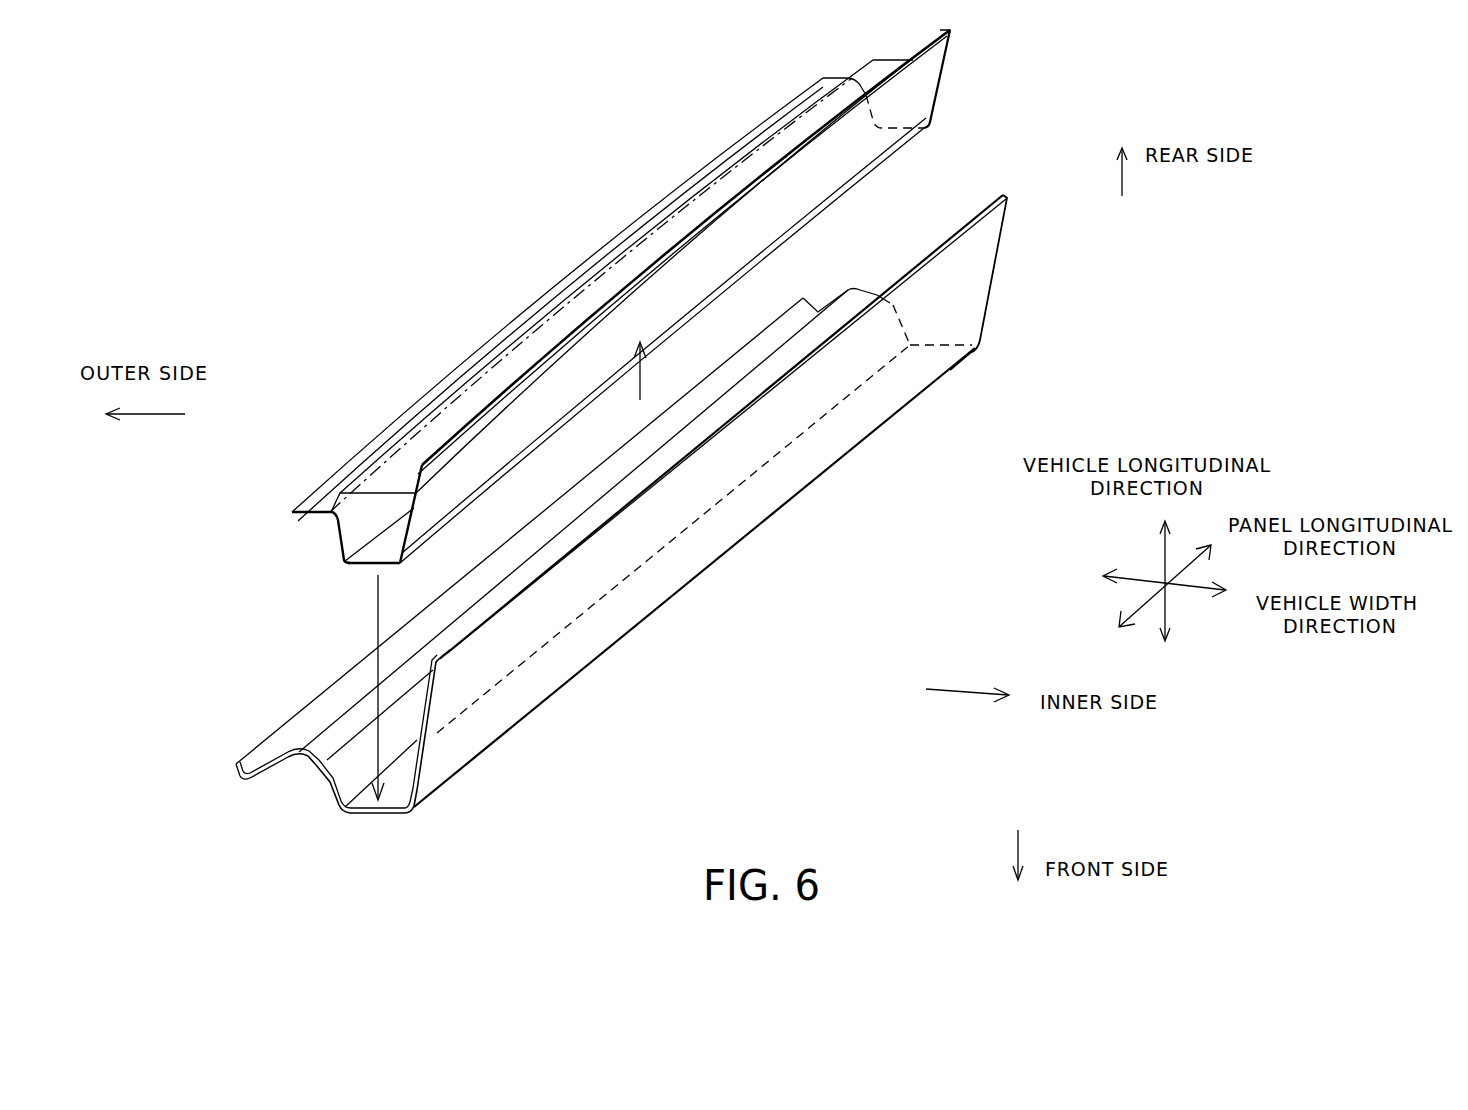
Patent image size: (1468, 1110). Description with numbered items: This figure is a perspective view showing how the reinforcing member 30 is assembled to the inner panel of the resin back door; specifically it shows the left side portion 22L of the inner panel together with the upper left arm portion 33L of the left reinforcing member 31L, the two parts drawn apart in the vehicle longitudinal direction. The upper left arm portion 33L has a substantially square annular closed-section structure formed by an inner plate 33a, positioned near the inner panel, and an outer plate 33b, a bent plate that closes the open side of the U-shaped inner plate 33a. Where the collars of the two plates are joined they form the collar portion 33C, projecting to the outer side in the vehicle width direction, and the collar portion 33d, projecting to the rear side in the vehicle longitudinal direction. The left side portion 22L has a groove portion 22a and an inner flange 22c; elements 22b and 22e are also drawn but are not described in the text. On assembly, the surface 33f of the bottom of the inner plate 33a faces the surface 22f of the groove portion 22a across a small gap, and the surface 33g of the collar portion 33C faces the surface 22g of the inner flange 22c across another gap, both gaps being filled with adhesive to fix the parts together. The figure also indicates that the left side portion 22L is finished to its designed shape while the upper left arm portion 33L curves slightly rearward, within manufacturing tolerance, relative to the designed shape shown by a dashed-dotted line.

The reinforcing member 30 is at (666, 190).
The left reinforcing member 31L is at (615, 345).
The upper left arm portion 33L is at (920, 108).
The collar portion 33d is at (934, 21).
The surface of the collar portion 33g is at (300, 513).
The inner plate 33a is at (342, 563).
The surface of a bottom portion of the inner plate 33f is at (376, 567).
The collar portion 33C is at (418, 462).
The outer plate 33b is at (380, 488).
The left side portion 22L is at (1005, 278).
The surface of the inner flange 22g is at (325, 742).
The flange tip of lower panel 22e is at (246, 766).
The inner flange 22c is at (307, 764).
The groove portion 22a is at (380, 816).
The surface of the groove portion 22f is at (430, 792).
The inner wall of lower panel 22b is at (440, 745).